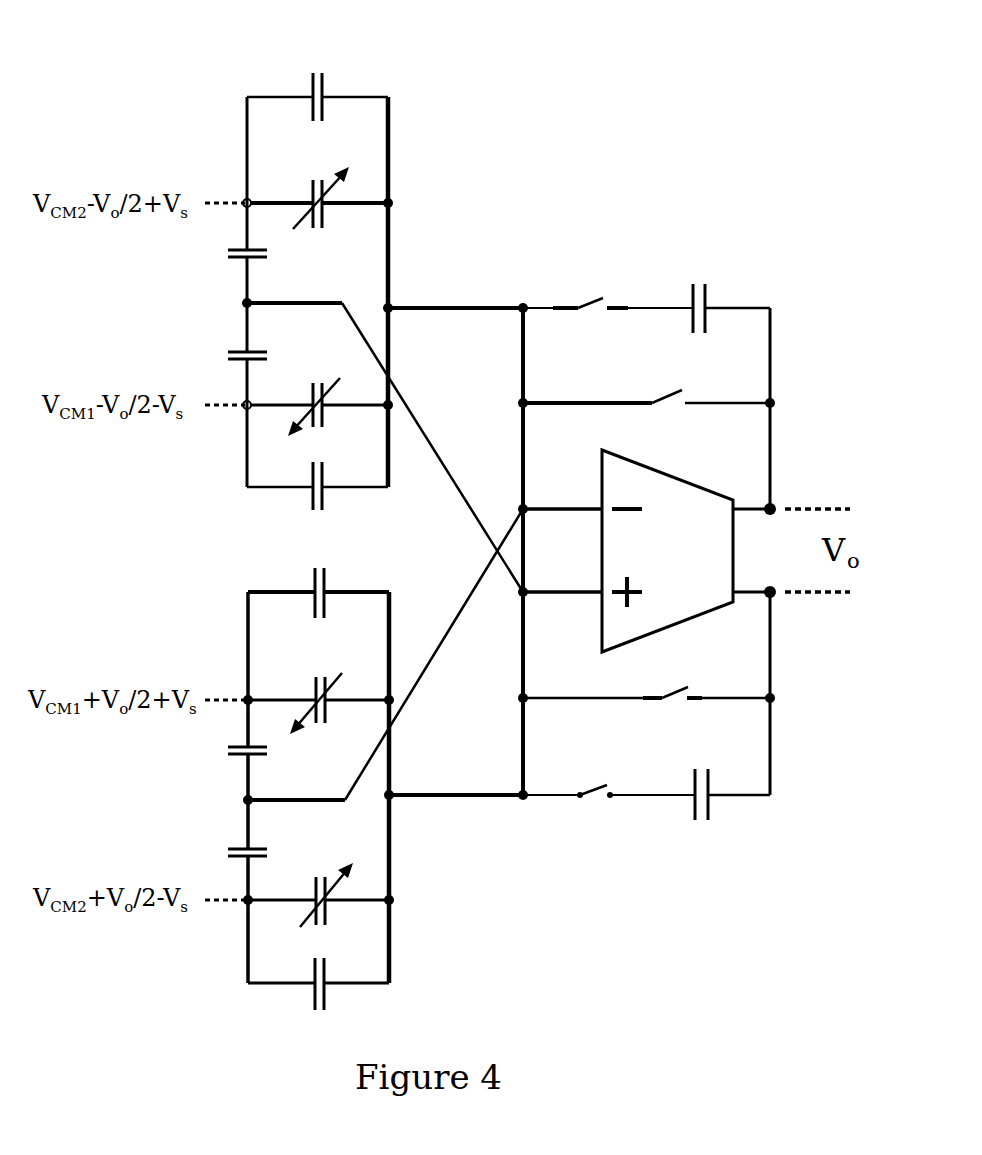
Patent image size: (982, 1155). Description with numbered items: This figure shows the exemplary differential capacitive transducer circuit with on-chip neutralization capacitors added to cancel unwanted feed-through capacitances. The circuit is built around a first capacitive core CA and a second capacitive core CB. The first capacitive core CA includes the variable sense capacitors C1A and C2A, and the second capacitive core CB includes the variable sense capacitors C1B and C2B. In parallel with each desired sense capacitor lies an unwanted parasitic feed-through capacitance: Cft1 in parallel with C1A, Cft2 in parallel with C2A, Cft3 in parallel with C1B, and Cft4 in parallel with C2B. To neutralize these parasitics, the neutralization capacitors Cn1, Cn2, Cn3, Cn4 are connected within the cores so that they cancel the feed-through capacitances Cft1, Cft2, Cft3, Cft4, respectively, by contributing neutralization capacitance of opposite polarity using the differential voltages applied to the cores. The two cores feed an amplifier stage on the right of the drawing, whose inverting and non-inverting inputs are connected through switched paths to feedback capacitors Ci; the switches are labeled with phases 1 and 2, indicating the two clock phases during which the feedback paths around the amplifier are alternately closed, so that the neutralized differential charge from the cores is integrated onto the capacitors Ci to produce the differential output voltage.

The phase 1 switch 1 is at (646, 534).
The phase 2 switch 2 is at (609, 533).
The first capacitive core CA is at (174, 105).
The second capacitive core CB is at (173, 597).
The feed-through capacitance Cft1 is at (349, 115).
The feed-through capacitance Cft2 is at (350, 480).
The feed-through capacitance Cft3 is at (351, 608).
The feed-through capacitance Cft4 is at (352, 977).
The variable capacitor C1A is at (319, 224).
The variable capacitor C2A is at (319, 382).
The variable capacitor C1B is at (318, 877).
The variable capacitor C2B is at (318, 727).
The neutralization capacitor Cn1 is at (222, 261).
The neutralization capacitor Cn2 is at (222, 359).
The neutralization capacitor Cn3 is at (222, 758).
The neutralization capacitor Cn4 is at (222, 858).
The integration capacitor Ci is at (727, 557).